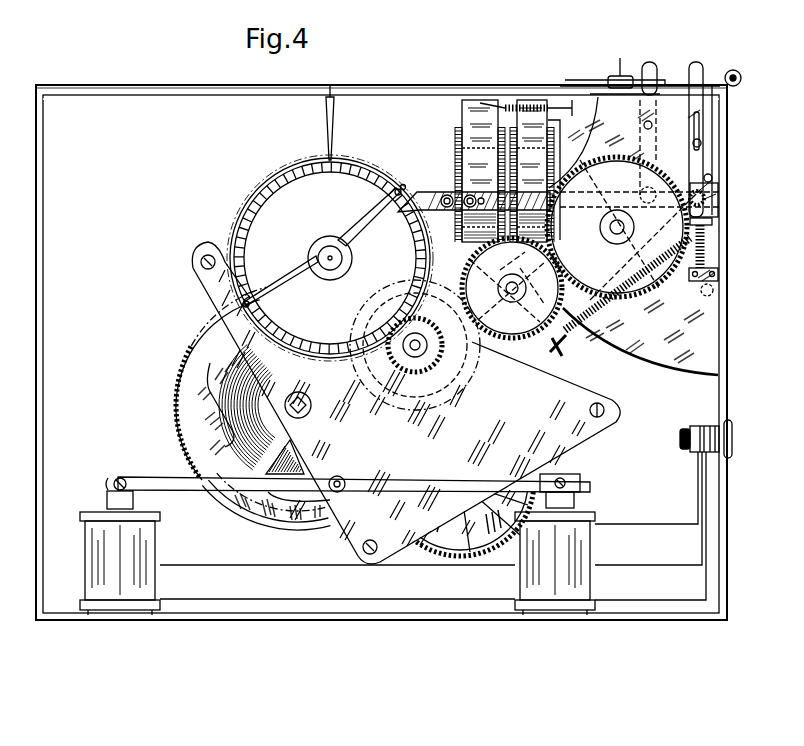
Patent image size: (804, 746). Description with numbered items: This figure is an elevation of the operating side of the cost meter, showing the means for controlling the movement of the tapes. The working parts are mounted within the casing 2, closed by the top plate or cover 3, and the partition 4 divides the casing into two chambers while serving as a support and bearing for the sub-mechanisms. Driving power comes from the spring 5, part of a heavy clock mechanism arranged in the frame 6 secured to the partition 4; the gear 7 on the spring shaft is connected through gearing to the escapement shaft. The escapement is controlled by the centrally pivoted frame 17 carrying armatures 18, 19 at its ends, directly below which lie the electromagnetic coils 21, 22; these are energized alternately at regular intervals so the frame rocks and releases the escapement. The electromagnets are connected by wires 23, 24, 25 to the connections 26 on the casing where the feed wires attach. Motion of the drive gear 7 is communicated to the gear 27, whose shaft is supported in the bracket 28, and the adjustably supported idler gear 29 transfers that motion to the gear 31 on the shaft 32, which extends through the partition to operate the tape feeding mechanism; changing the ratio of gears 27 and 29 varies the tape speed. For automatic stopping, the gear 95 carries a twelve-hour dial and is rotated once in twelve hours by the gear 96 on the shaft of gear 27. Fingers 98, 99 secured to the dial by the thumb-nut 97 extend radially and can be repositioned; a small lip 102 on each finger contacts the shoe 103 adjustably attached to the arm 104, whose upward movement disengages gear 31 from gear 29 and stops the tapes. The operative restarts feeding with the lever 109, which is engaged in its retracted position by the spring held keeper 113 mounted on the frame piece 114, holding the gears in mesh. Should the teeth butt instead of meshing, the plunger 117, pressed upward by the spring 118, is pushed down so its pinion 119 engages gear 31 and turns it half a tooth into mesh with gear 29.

The casing 2 is at (43, 334).
The top plate or cover 3 is at (388, 86).
The partition 4 is at (381, 167).
The spring 5 is at (232, 408).
The frame 6 is at (205, 290).
The gear 7 is at (182, 446).
The frame 17 is at (447, 480).
The armature 18 is at (577, 498).
The armature 19 is at (110, 505).
The electromagnetic coil 21 is at (555, 563).
The electromagnetic coil 22 is at (120, 563).
The wire 23 is at (653, 524).
The wire 24 is at (258, 565).
The wire 25 is at (290, 600).
The connections 26 is at (705, 426).
The gear 27 is at (415, 345).
The bracket 28 is at (633, 236).
The idler gear 29 is at (512, 288).
The gear 31 is at (633, 200).
The shaft 32 is at (610, 238).
The gear 95 is at (330, 223).
The gear 96 is at (419, 337).
The thumb-nut 97 is at (328, 248).
The finger 98 is at (280, 286).
The finger 99 is at (369, 220).
The lip 102 is at (394, 188).
The shoe 103 is at (418, 194).
The arm 104 is at (530, 200).
The lever 109 is at (656, 70).
The spring held keeper 113 is at (620, 74).
The frame piece 114 is at (437, 95).
The plunger 117 is at (698, 170).
The spring 118 is at (712, 248).
The pinion 119 is at (720, 196).